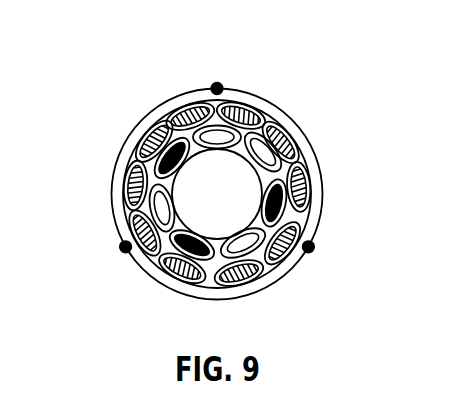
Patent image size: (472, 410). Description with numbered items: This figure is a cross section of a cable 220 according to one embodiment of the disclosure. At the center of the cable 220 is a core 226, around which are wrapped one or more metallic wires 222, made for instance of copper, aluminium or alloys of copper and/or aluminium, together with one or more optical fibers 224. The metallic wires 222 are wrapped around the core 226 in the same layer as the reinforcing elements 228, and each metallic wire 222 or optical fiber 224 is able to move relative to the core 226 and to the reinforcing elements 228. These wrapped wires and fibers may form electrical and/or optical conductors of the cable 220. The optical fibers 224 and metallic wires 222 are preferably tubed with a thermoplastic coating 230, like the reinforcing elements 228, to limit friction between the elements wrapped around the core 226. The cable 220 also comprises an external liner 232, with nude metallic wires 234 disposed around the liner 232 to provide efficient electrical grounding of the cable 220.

The cable 220 is at (298, 101).
The metallic wires 222 is at (180, 248).
The optical fibers 224 is at (240, 272).
The core 226 is at (190, 186).
The reinforcing elements 228 is at (220, 134).
The thermoplastic coating 230 is at (293, 170).
The external liner 232 is at (137, 132).
The nude metallic wires 234 is at (215, 86).